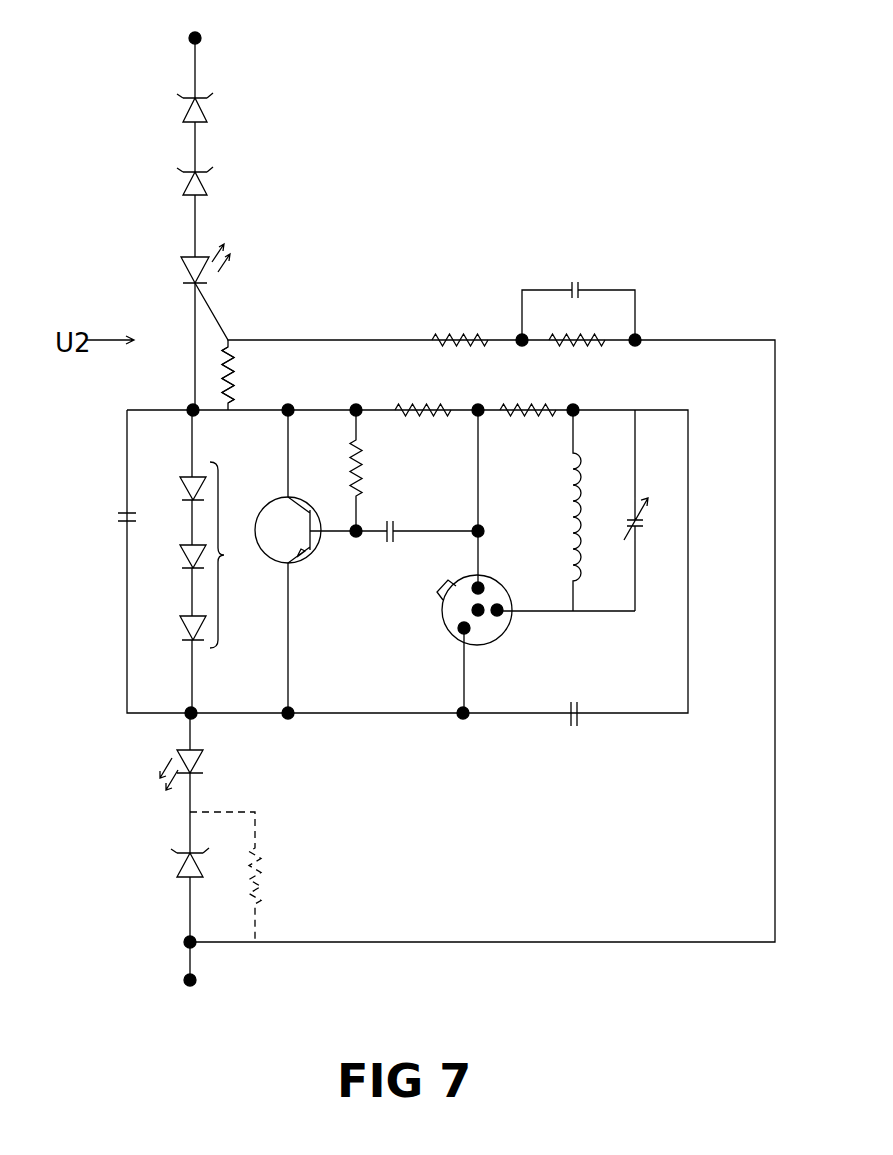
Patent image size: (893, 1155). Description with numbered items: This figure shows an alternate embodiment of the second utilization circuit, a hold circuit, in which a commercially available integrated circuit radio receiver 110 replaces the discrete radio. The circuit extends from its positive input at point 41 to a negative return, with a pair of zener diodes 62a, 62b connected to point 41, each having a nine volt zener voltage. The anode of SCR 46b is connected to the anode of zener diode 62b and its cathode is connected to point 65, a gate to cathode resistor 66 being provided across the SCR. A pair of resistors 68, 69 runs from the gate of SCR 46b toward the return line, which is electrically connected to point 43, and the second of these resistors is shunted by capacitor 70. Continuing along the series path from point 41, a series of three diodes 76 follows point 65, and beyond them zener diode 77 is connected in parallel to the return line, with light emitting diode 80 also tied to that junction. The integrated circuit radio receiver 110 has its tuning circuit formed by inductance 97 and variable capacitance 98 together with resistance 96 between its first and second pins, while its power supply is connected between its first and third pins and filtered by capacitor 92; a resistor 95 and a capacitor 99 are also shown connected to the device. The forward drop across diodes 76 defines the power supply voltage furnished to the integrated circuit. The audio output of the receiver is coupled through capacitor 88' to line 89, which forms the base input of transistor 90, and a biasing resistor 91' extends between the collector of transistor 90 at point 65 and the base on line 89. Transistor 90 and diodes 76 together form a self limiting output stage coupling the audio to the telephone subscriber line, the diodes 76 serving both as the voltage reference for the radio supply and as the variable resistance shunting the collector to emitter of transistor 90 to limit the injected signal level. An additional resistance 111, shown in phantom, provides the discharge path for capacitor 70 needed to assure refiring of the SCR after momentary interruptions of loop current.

The point 41 is at (201, 33).
The zener diode 62a is at (212, 110).
The zener diode 62b is at (212, 185).
The SCR 46b is at (181, 258).
The gate to cathode resistor 66 is at (233, 378).
The point 65 is at (190, 405).
The resistor 68 is at (447, 334).
The resistor 69 is at (576, 345).
The capacitor 70 is at (578, 283).
The resistor 95 is at (414, 404).
The resistance 96 is at (511, 404).
The biasing resistor 91' is at (382, 470).
The capacitor 92 is at (120, 511).
The diodes 76 is at (220, 555).
The transistor 90 is at (301, 562).
The line 89 is at (350, 540).
The capacitor 88' is at (432, 543).
The integrated circuit radio receiver 110 is at (490, 632).
The inductance 97 is at (577, 560).
The variable capacitance 98 is at (638, 530).
The capacitor 99 is at (578, 720).
The light emitting diode 80 is at (205, 765).
The additional resistance 111 is at (258, 856).
The zener diode 77 is at (177, 870).
The point 43 is at (194, 986).